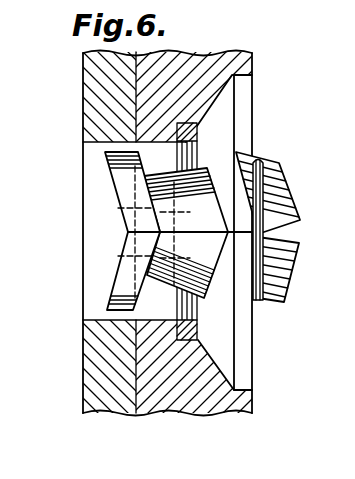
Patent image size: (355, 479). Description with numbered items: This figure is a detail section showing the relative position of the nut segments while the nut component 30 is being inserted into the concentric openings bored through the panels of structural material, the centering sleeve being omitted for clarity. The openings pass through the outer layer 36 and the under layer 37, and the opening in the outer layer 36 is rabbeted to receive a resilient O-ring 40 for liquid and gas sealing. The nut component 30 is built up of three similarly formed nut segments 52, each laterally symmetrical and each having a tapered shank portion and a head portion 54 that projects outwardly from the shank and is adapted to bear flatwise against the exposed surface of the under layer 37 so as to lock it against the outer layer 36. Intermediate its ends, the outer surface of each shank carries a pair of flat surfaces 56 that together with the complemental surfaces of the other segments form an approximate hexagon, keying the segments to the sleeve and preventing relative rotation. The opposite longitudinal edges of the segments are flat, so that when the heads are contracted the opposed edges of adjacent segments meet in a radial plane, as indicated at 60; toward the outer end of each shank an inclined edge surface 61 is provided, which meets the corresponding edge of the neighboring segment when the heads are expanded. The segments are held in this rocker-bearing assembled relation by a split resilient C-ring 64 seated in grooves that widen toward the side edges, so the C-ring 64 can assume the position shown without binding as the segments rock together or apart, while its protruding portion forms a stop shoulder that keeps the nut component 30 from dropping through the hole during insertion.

The nut component 30 is at (210, 160).
The outer layer 36 is at (206, 64).
The under layer 37 is at (97, 70).
The O-ring 40 is at (252, 352).
The nut segments 52 is at (287, 183).
The head portion 54 is at (125, 174).
The flat surfaces 56 is at (230, 176).
The radial plane 60 is at (134, 233).
The edge surface 61 is at (288, 234).
The C-ring 64 is at (263, 160).